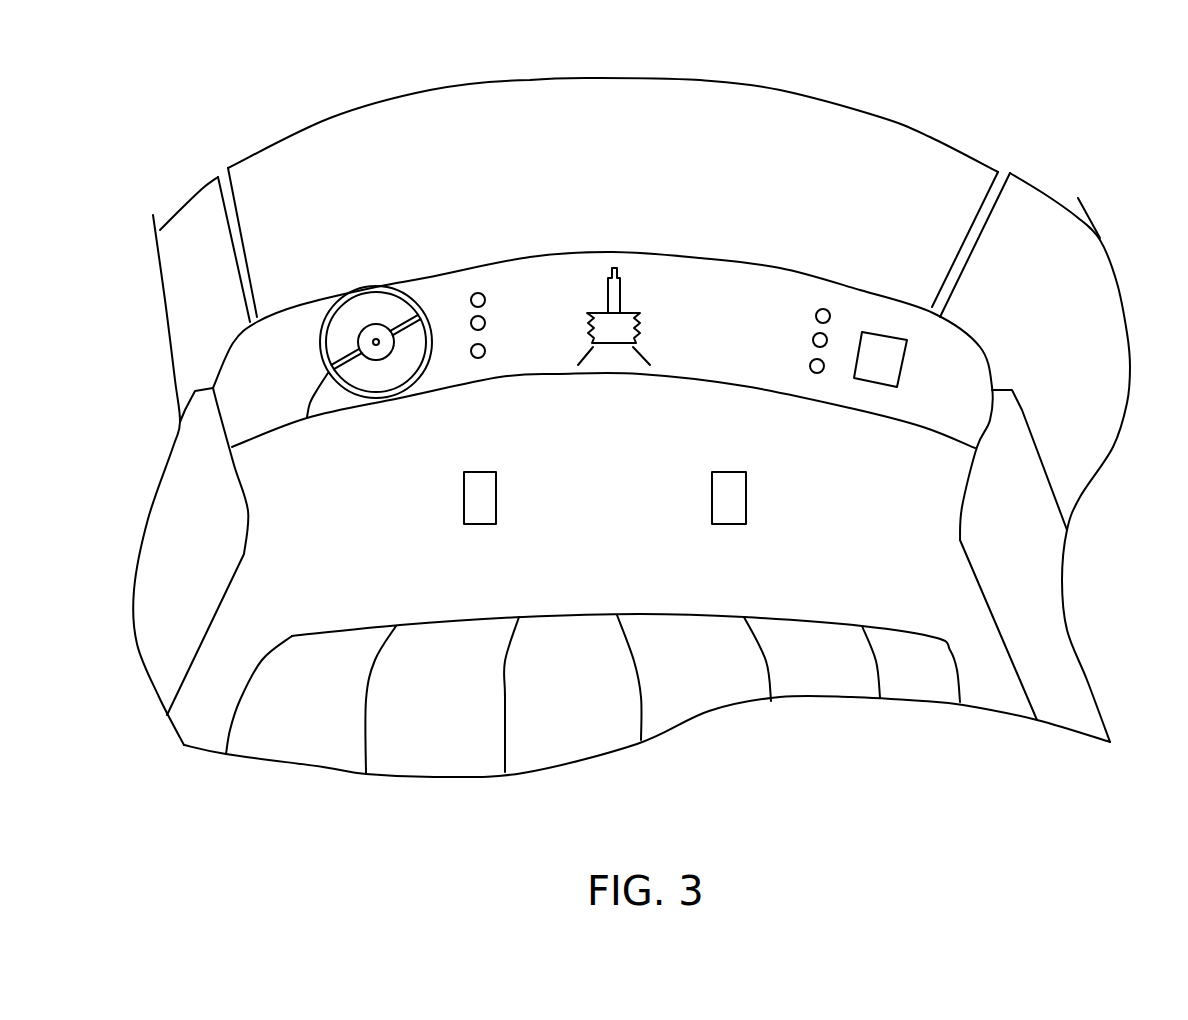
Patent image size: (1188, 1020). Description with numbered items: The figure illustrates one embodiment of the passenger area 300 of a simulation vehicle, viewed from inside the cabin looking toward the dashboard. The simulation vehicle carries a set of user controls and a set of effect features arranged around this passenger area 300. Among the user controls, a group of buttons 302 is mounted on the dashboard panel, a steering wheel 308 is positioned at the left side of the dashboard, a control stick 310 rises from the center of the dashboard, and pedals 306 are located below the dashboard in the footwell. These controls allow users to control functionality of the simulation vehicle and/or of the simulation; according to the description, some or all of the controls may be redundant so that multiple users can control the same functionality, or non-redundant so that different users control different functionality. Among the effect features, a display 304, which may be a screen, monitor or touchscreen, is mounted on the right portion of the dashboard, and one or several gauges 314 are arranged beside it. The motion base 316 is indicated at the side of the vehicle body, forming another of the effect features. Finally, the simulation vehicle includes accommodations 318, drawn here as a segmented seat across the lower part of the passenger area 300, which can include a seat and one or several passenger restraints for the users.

The passenger area 300 is at (1008, 50).
The buttons 302 is at (495, 318).
The displays 304 is at (880, 358).
The pedals 306 is at (482, 470).
The steering wheels 308 is at (332, 376).
The control sticks 310 is at (620, 293).
The gauges 314 is at (800, 327).
The motion base 316 is at (1022, 503).
The accommodations 318 is at (784, 672).